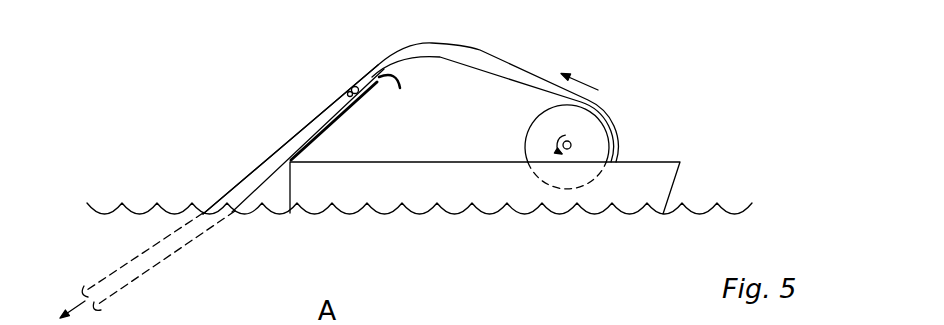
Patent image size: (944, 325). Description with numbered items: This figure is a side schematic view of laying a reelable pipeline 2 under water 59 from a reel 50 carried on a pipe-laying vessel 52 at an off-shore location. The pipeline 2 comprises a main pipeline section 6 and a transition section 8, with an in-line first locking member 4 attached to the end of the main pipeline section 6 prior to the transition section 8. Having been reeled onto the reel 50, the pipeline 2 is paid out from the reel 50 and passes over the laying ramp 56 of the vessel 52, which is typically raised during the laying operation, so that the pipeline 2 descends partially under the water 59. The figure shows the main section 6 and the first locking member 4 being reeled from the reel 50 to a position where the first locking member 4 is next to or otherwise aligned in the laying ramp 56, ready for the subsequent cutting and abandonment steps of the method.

The reelable pipeline 2 is at (228, 152).
The first locking member 4 is at (349, 89).
The main pipeline section 6 is at (288, 142).
The transition section 8 is at (521, 68).
The reel 50 is at (527, 128).
The pipe-laying vessel 52 is at (655, 161).
The laying ramp 56 is at (367, 110).
The water 59 is at (706, 259).